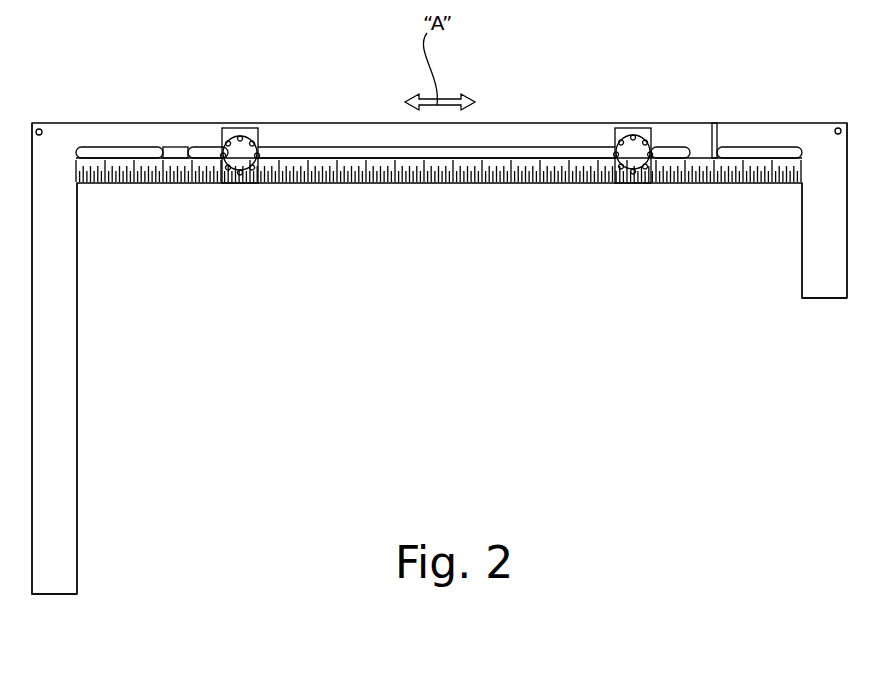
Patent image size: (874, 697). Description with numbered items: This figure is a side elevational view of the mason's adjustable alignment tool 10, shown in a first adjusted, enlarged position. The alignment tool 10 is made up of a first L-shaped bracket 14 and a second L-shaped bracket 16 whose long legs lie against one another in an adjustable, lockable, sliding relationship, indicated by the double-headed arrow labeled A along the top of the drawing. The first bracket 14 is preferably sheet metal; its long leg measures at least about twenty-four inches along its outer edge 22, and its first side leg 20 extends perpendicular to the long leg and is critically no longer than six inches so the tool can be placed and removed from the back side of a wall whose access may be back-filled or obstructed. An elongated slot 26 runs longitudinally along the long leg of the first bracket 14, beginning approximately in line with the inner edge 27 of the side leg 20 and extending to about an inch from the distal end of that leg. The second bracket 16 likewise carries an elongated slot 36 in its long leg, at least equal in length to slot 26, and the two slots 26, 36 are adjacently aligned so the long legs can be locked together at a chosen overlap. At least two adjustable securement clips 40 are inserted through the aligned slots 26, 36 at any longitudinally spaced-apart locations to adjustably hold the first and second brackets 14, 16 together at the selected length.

The alignment tool 10 is at (422, 343).
The first L-shaped bracket 14 is at (806, 259).
The second L-shaped bracket 16 is at (58, 528).
The first side leg 20 is at (835, 286).
The outer edge 22 is at (77, 478).
The elongated slot 26 is at (772, 151).
The inner edge 27 is at (802, 196).
The elongated slot 36 is at (150, 150).
The adjustable securement clip 40 is at (240, 157).